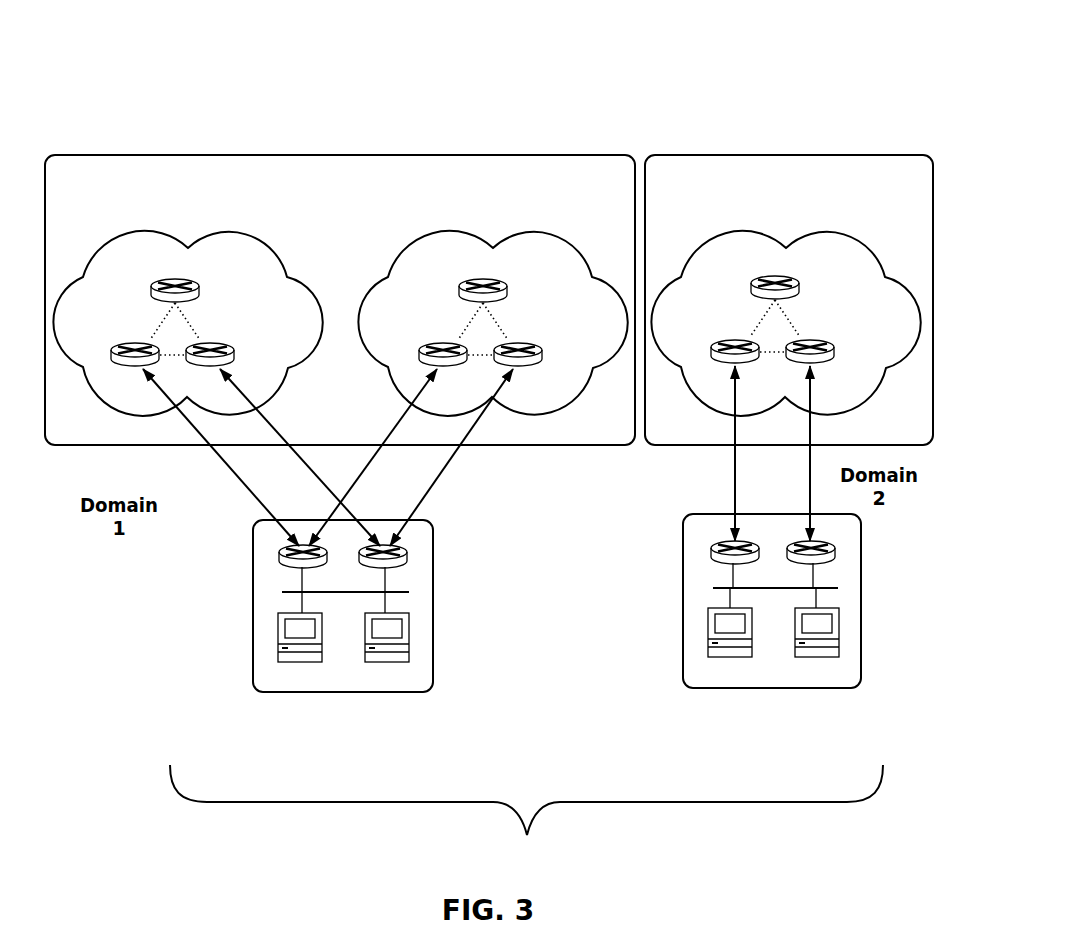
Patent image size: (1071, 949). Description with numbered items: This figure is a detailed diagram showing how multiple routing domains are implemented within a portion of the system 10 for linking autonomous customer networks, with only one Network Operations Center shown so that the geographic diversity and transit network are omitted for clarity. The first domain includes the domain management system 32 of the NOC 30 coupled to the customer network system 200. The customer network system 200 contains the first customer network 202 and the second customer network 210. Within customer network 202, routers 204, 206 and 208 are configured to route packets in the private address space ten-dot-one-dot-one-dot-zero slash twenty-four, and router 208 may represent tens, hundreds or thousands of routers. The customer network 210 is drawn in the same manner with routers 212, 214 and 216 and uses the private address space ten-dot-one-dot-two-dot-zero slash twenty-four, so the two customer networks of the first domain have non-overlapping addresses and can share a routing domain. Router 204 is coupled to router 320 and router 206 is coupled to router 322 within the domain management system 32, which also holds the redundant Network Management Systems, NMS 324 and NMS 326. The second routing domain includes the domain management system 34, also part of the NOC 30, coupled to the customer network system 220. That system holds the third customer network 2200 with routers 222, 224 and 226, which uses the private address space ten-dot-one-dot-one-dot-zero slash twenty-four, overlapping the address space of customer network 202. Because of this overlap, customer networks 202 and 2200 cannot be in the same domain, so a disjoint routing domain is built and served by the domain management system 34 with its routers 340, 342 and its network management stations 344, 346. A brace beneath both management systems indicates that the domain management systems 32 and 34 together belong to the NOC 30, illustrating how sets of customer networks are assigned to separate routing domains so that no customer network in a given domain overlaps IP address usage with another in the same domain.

The system 10 is at (680, 58).
The customer network system 200 is at (412, 155).
The customer No. 1 network 202 is at (270, 243).
The router 204 is at (135, 344).
The router 206 is at (235, 344).
The router 208 is at (177, 278).
The customer No. 2 network 210 is at (401, 263).
The router 212 is at (441, 344).
The router 214 is at (543, 344).
The router 216 is at (485, 278).
The customer network system 220 is at (792, 155).
The customer No. 3 network 2200 is at (840, 228).
The router 222 is at (733, 341).
The router 224 is at (835, 341).
The router 226 is at (777, 275).
The Network Operations Center (NOC) 30 is at (526, 815).
The domain management system 32 is at (253, 648).
The router 320 is at (280, 553).
The router 322 is at (406, 553).
The NMS 324 is at (278, 640).
The NMS 326 is at (409, 640).
The domain management system 34 is at (683, 645).
The management router 340 is at (712, 549).
The management router 342 is at (834, 549).
The network management station (NMS) 344 is at (708, 635).
The network management station (NMS) 346 is at (839, 635).